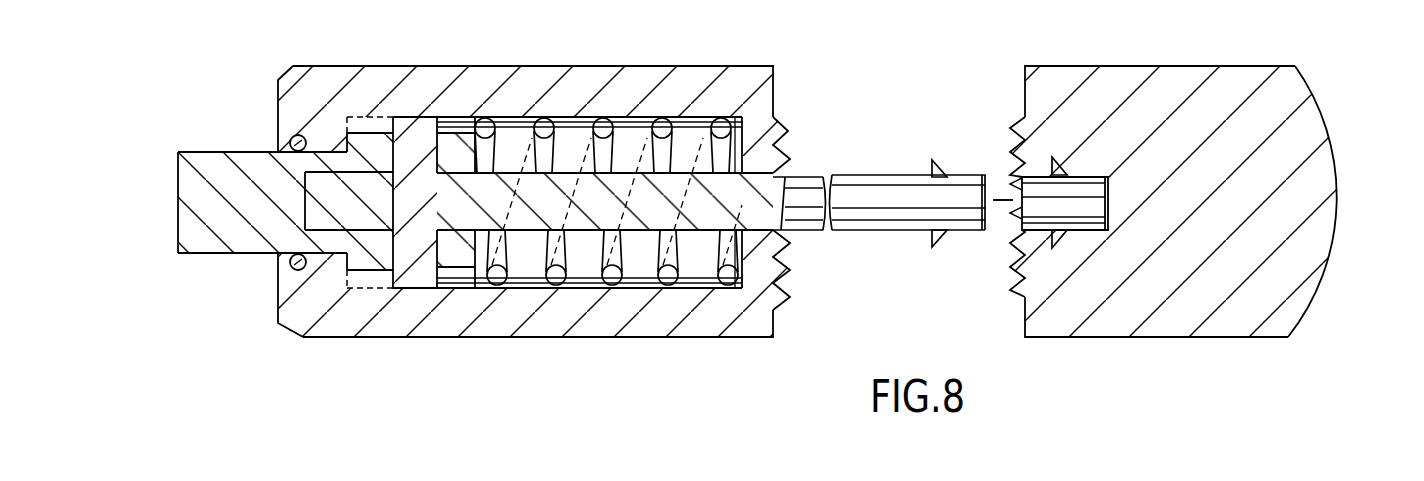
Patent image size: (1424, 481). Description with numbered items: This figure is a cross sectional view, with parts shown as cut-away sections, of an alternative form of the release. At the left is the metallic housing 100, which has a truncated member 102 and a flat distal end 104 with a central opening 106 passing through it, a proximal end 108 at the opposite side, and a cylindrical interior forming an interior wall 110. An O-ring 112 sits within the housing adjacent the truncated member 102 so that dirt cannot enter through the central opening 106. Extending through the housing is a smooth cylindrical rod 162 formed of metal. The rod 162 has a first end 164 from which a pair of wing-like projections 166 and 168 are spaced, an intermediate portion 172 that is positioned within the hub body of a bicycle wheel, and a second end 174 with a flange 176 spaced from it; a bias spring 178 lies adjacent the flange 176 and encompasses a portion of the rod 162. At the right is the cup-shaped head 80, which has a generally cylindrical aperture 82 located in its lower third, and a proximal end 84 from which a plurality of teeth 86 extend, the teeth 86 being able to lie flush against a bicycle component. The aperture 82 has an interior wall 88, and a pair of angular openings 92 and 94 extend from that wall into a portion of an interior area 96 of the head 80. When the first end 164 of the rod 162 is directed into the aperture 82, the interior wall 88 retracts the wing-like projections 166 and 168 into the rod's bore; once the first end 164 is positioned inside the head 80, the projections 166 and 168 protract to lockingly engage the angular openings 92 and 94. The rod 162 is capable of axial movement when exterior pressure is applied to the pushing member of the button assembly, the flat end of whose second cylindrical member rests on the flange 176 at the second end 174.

The cup-shaped head 80 is at (1316, 98).
The generally cylindrical aperture 82 is at (1090, 193).
The proximal end 84 is at (1025, 313).
The teeth 86 is at (775, 146).
The interior wall 88 is at (1097, 232).
The angular opening 92 is at (1057, 157).
The angular opening 94 is at (1067, 242).
The interior area 96 is at (1240, 255).
The metallic housing 100 is at (655, 66).
The truncated member 102 is at (297, 68).
The flat distal end 104 is at (280, 307).
The central opening 106 is at (277, 255).
The proximal end 108 is at (777, 90).
The interior wall 110 is at (573, 137).
The O-ring 112 is at (298, 140).
The smooth cylindrical rod 162 is at (910, 229).
The first end 164 is at (972, 175).
The wing-like projection 166 is at (932, 170).
The wing-like projection 168 is at (948, 229).
The intermediate portion 172 is at (877, 228).
The second end 174 is at (430, 300).
The flange 176 is at (453, 137).
The bias spring 178 is at (612, 278).